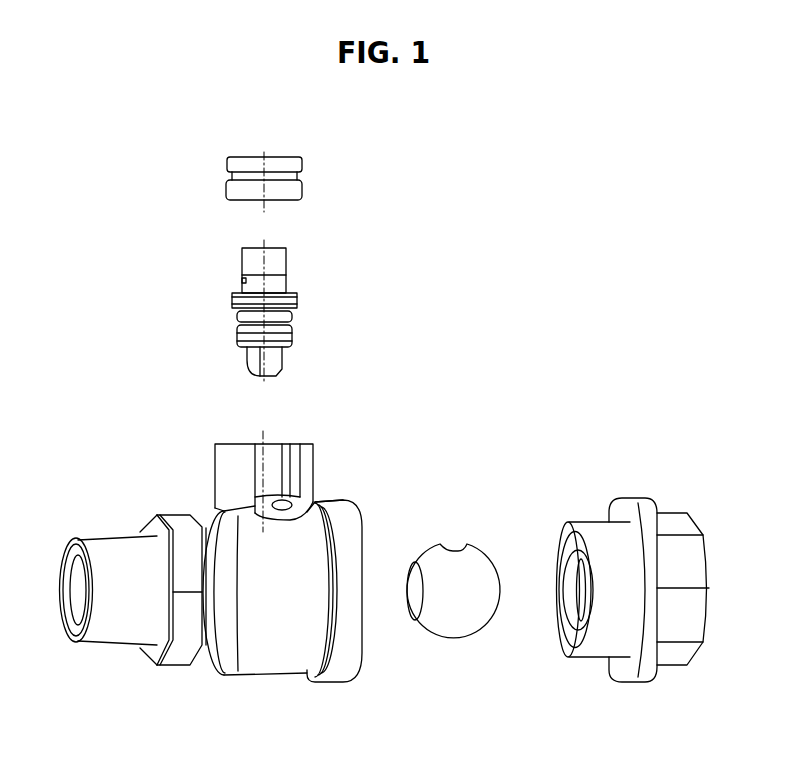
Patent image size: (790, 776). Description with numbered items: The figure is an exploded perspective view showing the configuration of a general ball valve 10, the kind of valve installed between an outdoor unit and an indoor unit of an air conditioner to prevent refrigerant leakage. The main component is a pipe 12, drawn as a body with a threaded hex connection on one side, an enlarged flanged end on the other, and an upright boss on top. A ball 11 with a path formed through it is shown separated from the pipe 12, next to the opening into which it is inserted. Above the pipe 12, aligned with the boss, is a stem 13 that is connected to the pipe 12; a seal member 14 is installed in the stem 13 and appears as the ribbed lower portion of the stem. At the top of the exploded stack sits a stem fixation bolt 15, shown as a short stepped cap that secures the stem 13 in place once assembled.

The ball valve 10 is at (531, 274).
The ball 11 is at (457, 624).
The pipe 12 is at (273, 658).
The stem 13 is at (285, 263).
The seal member 14 is at (293, 333).
The stem fixation bolt 15 is at (297, 192).